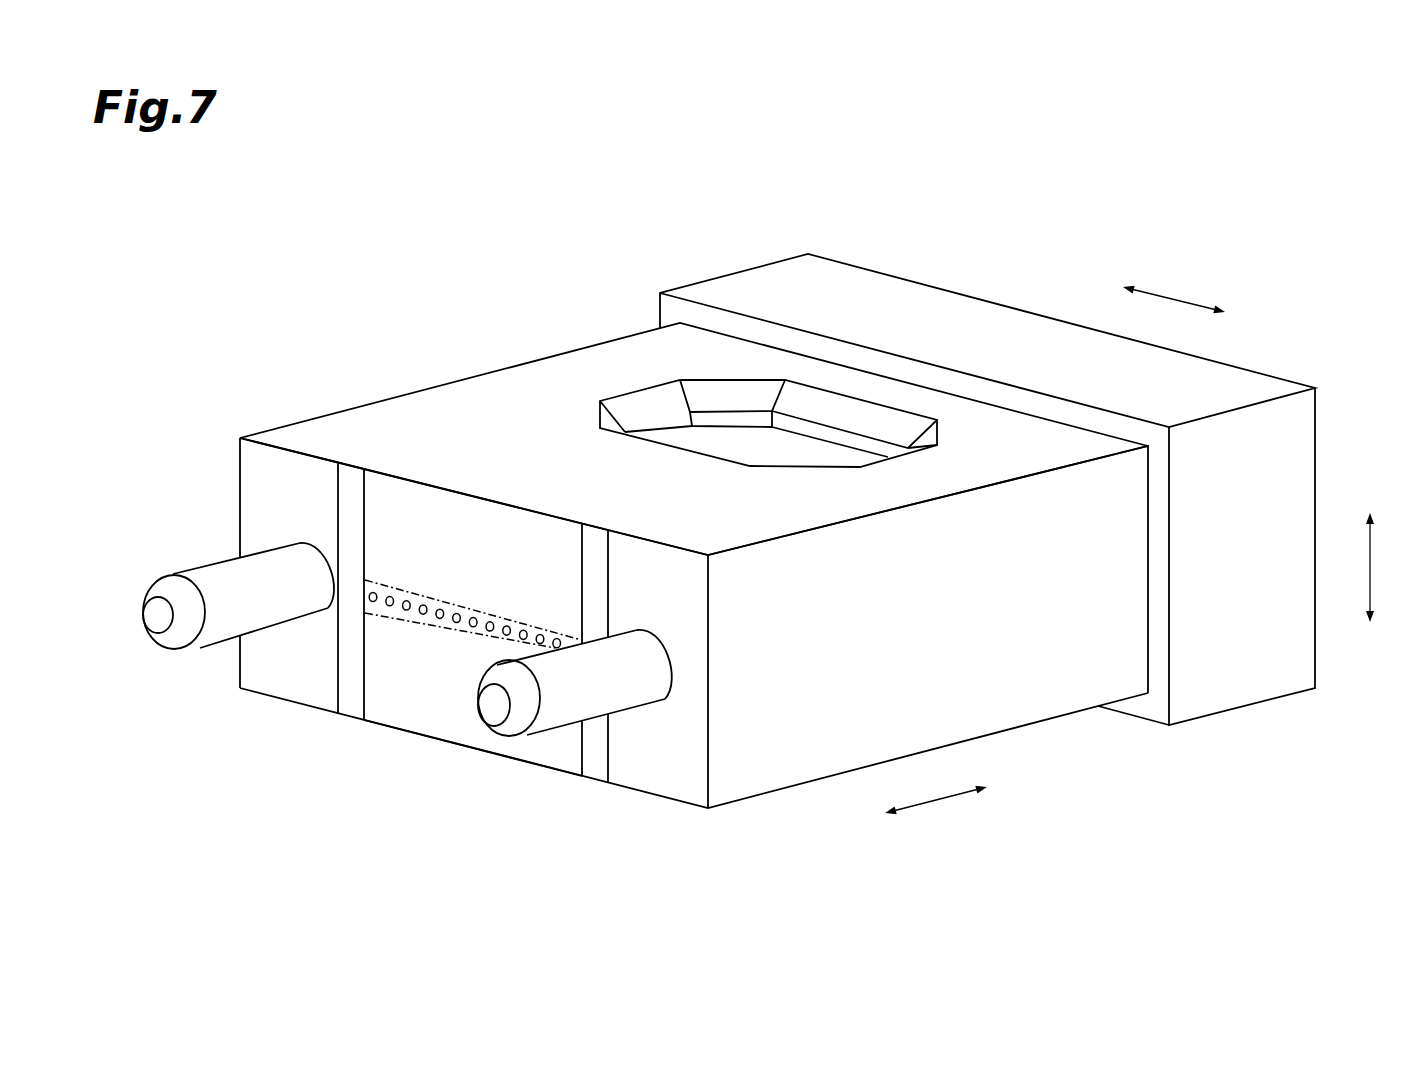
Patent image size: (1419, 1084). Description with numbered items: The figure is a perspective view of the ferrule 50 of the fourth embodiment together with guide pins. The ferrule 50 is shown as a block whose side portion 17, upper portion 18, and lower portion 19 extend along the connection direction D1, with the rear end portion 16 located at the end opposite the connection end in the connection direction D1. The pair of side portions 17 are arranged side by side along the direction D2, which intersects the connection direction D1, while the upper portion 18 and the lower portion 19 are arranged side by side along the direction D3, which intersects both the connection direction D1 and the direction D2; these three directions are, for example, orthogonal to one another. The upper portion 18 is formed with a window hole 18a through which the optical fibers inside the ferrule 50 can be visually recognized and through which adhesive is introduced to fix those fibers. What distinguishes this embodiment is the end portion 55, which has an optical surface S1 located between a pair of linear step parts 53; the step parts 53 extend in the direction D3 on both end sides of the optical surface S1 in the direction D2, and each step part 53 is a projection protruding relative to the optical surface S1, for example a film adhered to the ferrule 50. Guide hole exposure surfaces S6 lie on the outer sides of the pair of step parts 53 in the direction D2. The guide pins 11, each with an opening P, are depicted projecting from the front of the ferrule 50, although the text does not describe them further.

The ferrule 50 is at (590, 224).
The pipe 11 is at (330, 594).
The flow passage P is at (160, 618).
The rear end portion 16 is at (1320, 452).
The side portion 17 is at (1037, 692).
The upper portion 18 is at (550, 370).
The window hole 18a is at (807, 428).
The lower portion 19 is at (807, 783).
The step part 53 is at (350, 702).
The end portion 55 is at (418, 760).
The optical surface S1 is at (428, 592).
The guide hole exposure surface S6 is at (315, 630).
The connection direction D1 is at (936, 811).
The direction D2 is at (1174, 289).
The direction D3 is at (1390, 567).